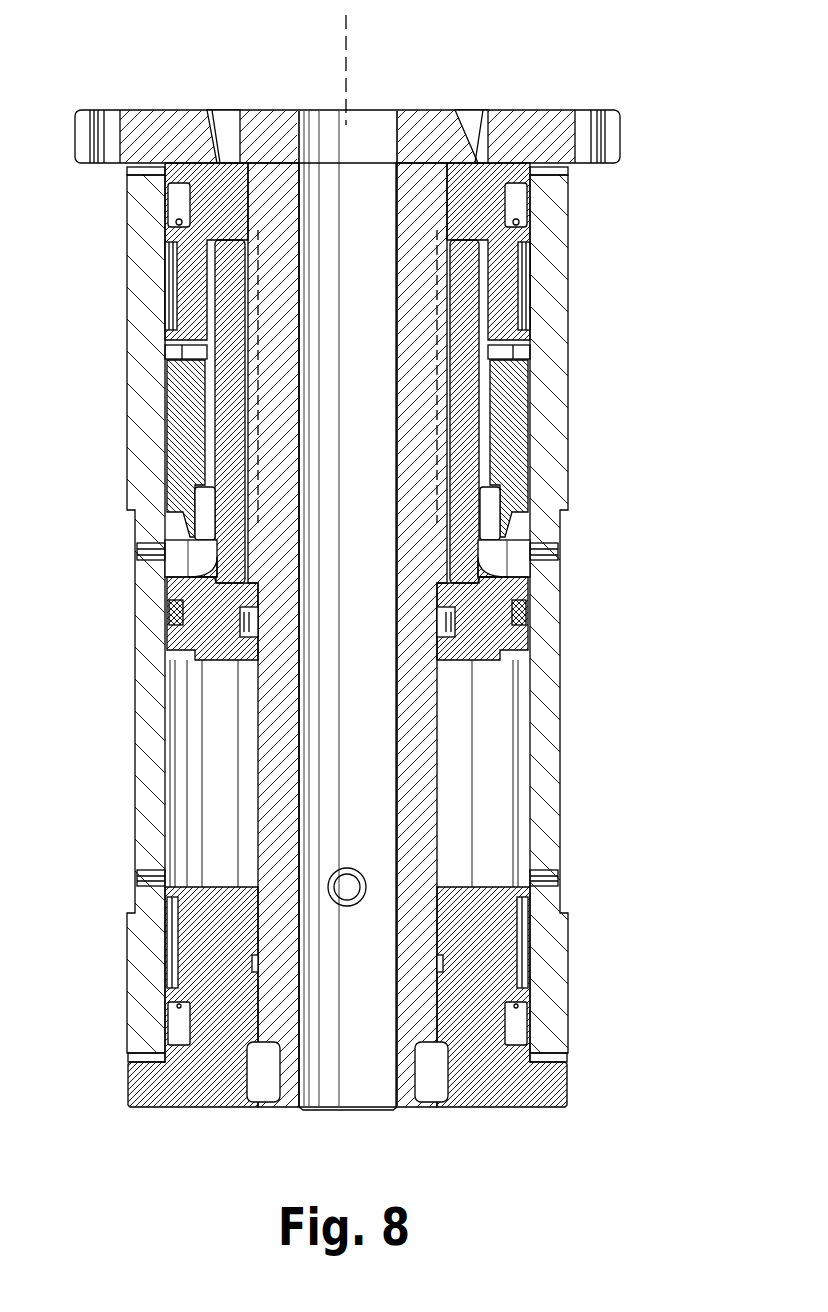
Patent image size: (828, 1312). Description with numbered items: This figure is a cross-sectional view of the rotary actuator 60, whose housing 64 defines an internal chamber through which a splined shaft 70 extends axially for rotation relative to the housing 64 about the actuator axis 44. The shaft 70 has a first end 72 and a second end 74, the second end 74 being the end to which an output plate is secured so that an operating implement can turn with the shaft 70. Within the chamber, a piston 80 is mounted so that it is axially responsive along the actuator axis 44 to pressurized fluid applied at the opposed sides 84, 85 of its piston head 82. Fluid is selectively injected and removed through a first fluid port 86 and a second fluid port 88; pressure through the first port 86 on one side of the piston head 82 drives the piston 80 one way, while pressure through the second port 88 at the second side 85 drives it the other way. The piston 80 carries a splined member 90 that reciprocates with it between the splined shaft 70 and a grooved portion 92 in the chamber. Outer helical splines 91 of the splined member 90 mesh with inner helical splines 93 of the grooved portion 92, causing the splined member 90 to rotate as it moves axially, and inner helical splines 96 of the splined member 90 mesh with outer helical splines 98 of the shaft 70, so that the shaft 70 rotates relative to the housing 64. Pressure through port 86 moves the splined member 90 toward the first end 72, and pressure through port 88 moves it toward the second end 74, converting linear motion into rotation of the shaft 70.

The actuator axis 44 is at (345, 40).
The rotary actuator 60 is at (632, 318).
The housing 64 is at (548, 797).
The shaft 70 is at (381, 1088).
The first end 72 is at (303, 1112).
The second end 74 is at (299, 110).
The piston 80 is at (487, 660).
The piston head 82 is at (180, 660).
The first side of piston head 84 is at (219, 660).
The second side of piston head 85 is at (192, 566).
The first fluid port 86 is at (152, 553).
The second fluid port 88 is at (148, 879).
The splined member 90 is at (397, 468).
The outer helical splines 91 is at (487, 349).
The grooved portion 92 is at (510, 388).
The inner helical splines 93 is at (485, 472).
The inner helical splines 96 is at (450, 303).
The outer helical splines 98 is at (440, 401).